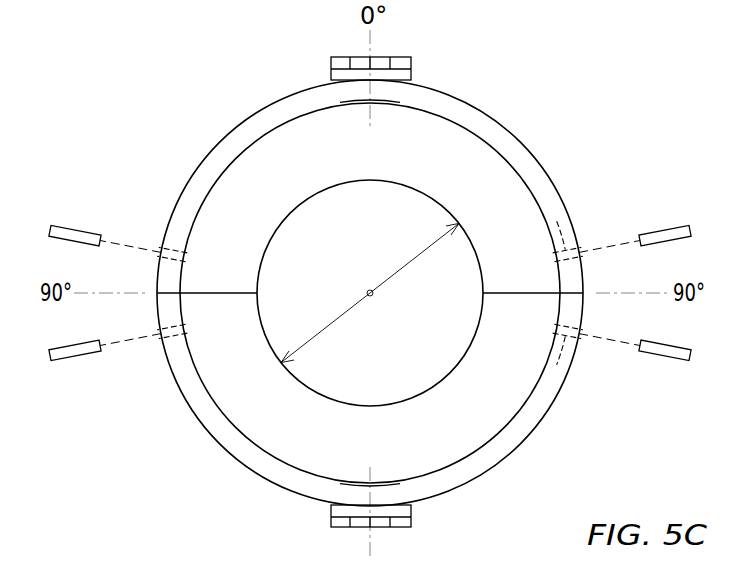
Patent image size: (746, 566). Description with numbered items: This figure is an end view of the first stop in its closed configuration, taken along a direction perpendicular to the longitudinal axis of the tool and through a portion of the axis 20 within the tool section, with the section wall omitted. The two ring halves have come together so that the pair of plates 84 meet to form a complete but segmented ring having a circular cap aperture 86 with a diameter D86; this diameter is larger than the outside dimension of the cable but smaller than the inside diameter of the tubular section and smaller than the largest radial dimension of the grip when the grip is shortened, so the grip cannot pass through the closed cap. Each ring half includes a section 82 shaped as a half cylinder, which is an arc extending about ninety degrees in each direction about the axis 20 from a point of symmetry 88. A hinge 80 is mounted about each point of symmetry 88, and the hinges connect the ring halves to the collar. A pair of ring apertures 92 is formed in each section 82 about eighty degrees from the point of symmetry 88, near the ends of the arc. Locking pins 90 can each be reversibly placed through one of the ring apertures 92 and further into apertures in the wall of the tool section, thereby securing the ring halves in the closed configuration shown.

The axis 20 is at (374, 297).
The hinge 80 is at (342, 57).
The section 82 is at (247, 132).
The plate 84 is at (468, 162).
The cap aperture 86 is at (319, 289).
The diameter of the cap aperture D86 is at (410, 258).
The point of symmetry 88 is at (370, 102).
The locking pin 90 is at (77, 230).
The ring aperture 92 is at (574, 207).